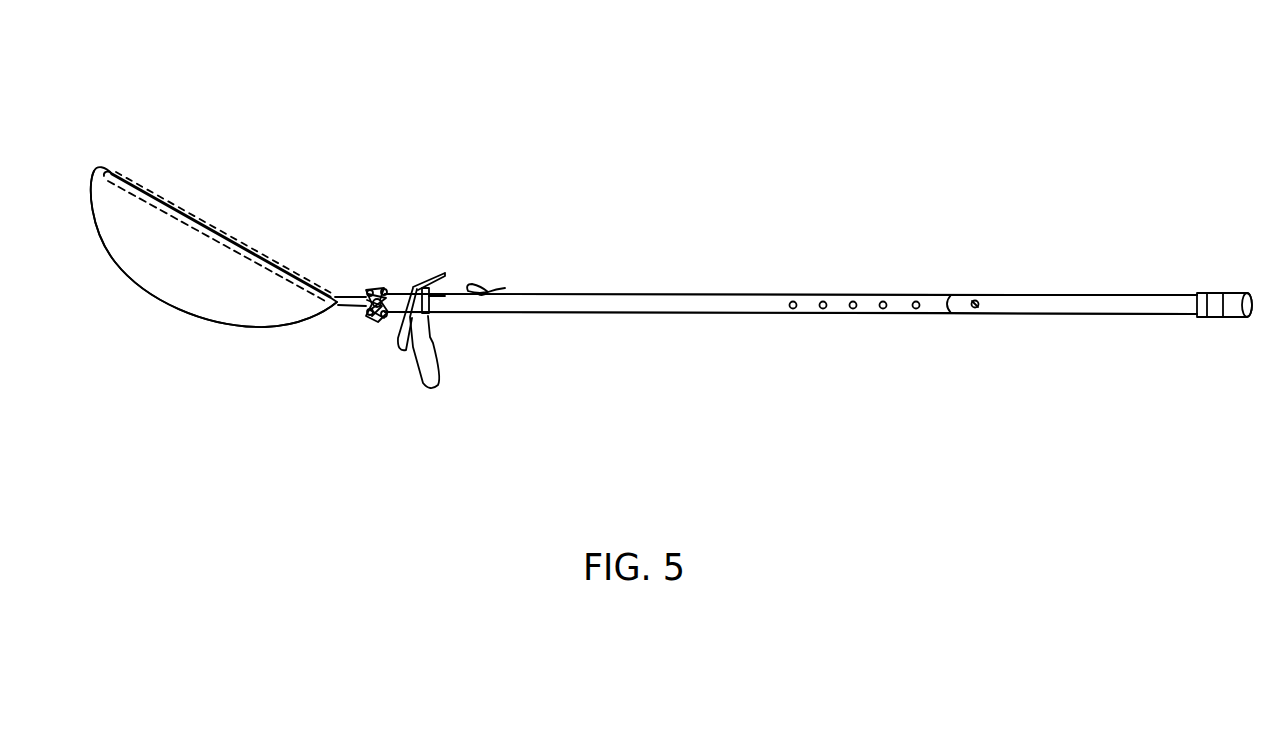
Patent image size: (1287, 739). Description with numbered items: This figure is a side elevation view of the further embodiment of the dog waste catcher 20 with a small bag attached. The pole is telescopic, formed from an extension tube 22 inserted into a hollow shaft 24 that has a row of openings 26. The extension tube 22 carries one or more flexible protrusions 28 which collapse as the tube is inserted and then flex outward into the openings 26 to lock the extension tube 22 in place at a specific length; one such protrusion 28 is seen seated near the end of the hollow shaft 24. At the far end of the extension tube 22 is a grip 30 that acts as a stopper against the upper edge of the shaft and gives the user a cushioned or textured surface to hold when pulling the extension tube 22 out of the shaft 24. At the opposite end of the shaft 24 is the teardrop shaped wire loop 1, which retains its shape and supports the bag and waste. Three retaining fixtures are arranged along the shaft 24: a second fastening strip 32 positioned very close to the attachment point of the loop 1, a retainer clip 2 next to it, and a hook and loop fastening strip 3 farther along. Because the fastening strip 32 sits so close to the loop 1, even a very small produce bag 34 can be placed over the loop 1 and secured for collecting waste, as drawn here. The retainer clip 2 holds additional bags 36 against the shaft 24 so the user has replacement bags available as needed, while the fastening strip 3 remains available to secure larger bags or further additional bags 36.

The teardrop shaped wire loop 1 is at (212, 227).
The retainer clip 2 is at (423, 287).
The fastening strip 3 is at (477, 291).
The dog waste catcher 20 is at (664, 202).
The extension tube 22 is at (1065, 305).
The hollow shaft 24 is at (643, 303).
The openings 26 is at (826, 302).
The flexible protrusions 28 is at (978, 307).
The grip 30 is at (1218, 290).
The second fastening strip 32 is at (368, 317).
The very small produce bag 34 is at (200, 312).
The additional bags 36 is at (425, 378).